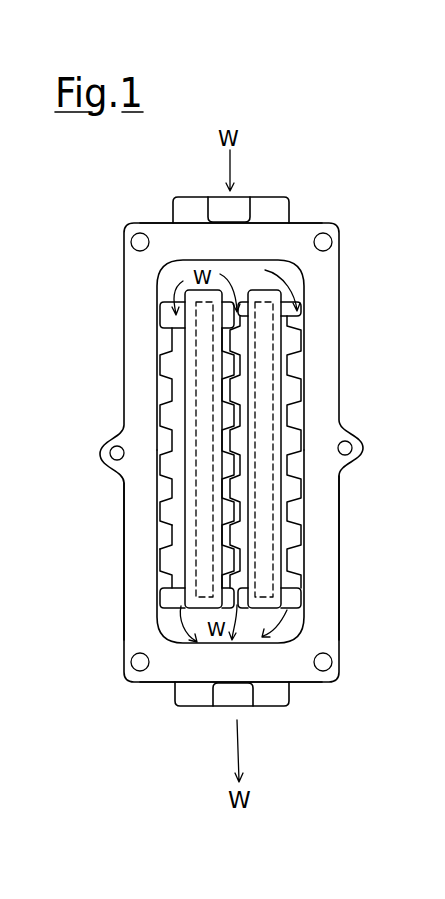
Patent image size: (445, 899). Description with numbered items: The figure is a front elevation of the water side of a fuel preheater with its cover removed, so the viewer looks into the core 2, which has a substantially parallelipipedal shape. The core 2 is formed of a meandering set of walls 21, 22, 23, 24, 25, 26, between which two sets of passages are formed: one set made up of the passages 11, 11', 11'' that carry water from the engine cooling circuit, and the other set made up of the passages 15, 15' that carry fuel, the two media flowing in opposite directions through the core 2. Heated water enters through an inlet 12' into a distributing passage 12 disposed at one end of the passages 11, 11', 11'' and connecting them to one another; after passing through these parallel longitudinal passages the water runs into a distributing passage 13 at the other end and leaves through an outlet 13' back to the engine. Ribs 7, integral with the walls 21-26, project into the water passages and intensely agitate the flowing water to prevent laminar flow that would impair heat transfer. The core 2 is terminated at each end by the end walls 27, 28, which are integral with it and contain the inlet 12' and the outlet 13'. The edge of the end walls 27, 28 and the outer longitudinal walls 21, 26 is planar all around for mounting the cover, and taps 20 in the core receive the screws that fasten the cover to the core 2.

The core 2 is at (121, 218).
The end wall 27 is at (170, 236).
The end wall 28 is at (214, 668).
The distributing passage 12 is at (248, 313).
The inlet 12' is at (236, 188).
The distributing passage 13 is at (281, 546).
The outlet 13' is at (253, 724).
The taps 20 is at (333, 240).
The outer longitudinal wall 21 is at (142, 493).
The outer longitudinal wall 26 is at (322, 547).
The passage 11 is at (153, 438).
The passage 11' is at (153, 443).
The passage 11'' is at (158, 452).
The passage 15' is at (302, 441).
The passage 15 is at (320, 449).
The ribs 7 is at (300, 427).
The wall 22 is at (165, 529).
The wall 23 is at (170, 543).
The wall 24 is at (163, 570).
The wall 25 is at (170, 592).